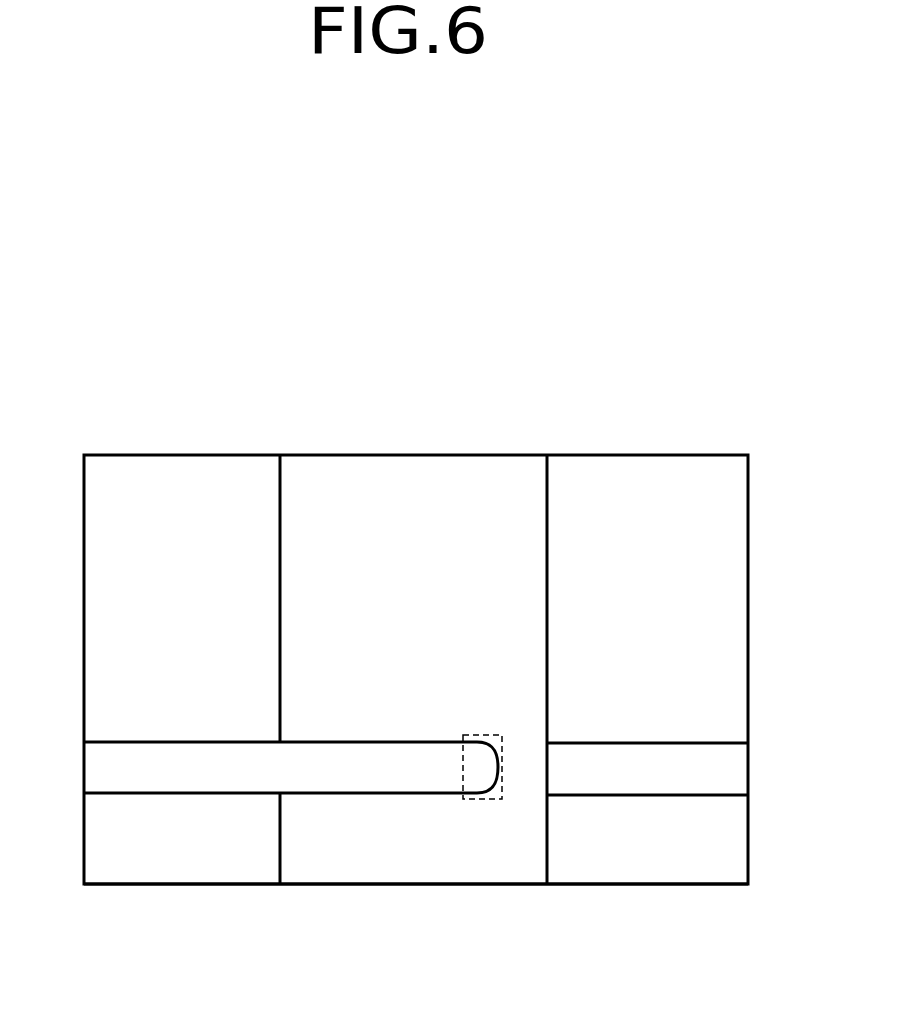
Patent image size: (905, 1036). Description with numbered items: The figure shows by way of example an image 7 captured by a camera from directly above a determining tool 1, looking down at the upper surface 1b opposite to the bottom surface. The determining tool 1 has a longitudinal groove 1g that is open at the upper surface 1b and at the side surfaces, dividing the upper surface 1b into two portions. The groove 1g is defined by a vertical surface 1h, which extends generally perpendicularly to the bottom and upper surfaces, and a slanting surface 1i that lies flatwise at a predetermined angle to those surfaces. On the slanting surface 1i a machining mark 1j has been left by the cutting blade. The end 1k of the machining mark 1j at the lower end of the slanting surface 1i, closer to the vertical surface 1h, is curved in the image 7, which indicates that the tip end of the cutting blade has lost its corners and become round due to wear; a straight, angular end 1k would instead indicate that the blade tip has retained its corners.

The image 7 is at (153, 413).
The determining tool 1 is at (707, 465).
The upper surface 1b is at (168, 872).
The groove 1g is at (505, 375).
The slanting surface 1i is at (373, 497).
The vertical surface 1h is at (547, 538).
The machining mark 1j is at (409, 792).
The end of machining mark 1k is at (478, 799).